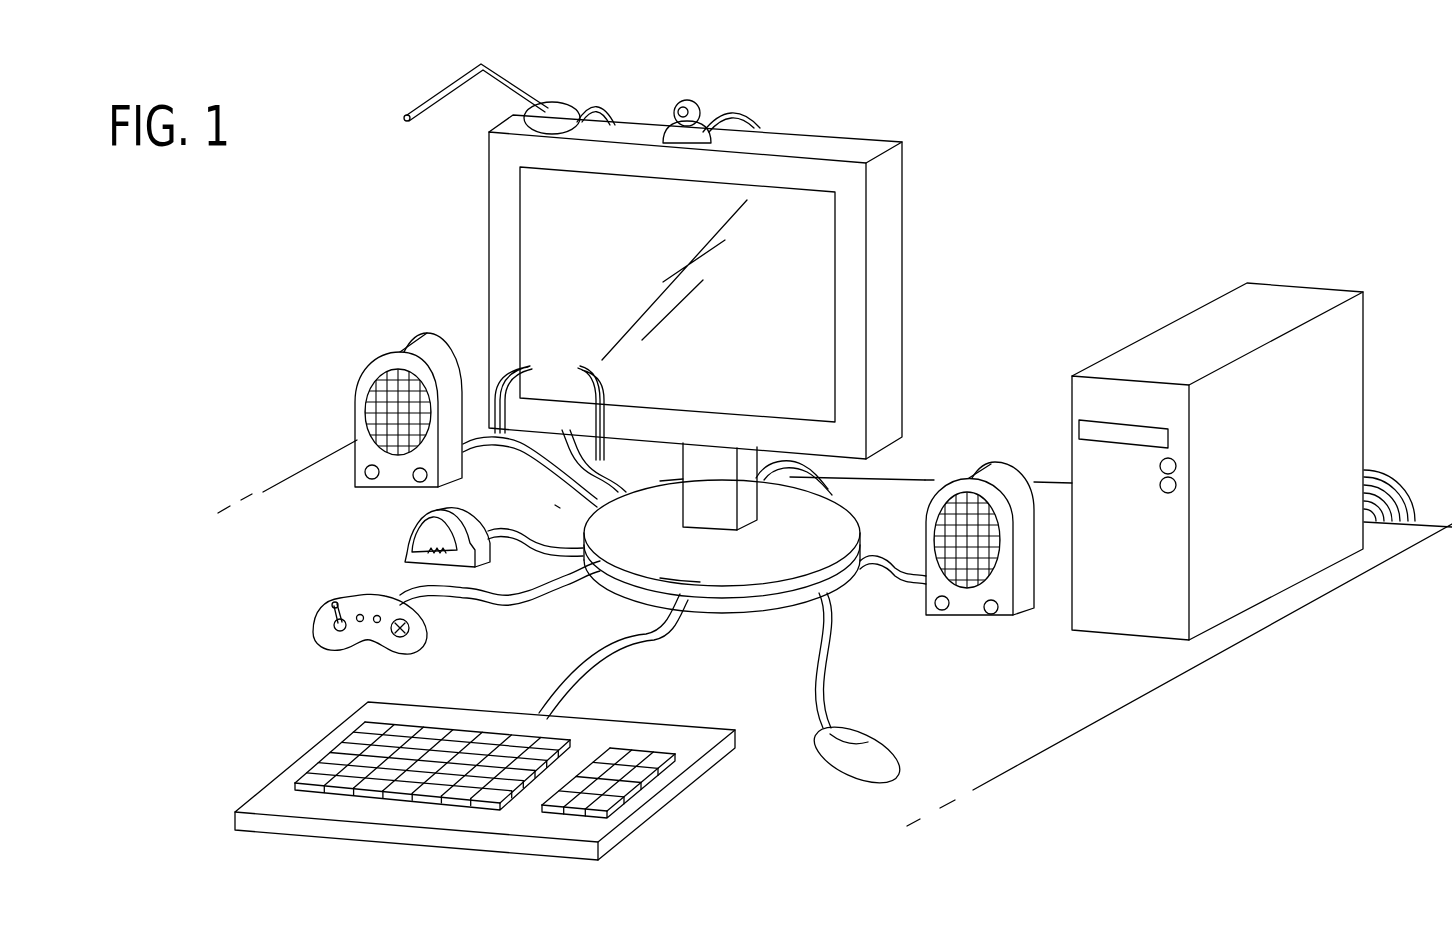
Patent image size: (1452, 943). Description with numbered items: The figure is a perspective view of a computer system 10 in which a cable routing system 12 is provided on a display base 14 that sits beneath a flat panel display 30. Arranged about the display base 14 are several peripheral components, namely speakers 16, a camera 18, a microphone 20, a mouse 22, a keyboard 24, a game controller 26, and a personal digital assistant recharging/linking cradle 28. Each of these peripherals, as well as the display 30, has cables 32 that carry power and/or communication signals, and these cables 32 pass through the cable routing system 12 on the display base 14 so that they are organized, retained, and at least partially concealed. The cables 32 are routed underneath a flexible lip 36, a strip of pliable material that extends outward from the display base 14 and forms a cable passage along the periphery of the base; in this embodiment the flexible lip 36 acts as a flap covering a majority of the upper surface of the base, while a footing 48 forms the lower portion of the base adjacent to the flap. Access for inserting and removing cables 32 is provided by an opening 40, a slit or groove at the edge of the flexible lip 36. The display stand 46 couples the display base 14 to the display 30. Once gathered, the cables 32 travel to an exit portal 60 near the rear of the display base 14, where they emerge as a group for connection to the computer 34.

The computer system 10 is at (1123, 93).
The cable routing system 12 is at (866, 498).
The display base 14 is at (555, 505).
The speakers 16 is at (360, 368).
The camera 18 is at (695, 98).
The microphone 20 is at (500, 78).
The mouse 22 is at (880, 752).
The keyboard 24 is at (345, 715).
The game controller 26 is at (365, 600).
The personal digital assistant recharging/linking cradle 28 is at (405, 532).
The display 30 is at (848, 117).
The cables 32 is at (593, 104).
The computer 34 is at (1362, 388).
The flexible lip 36 is at (820, 527).
The opening 40 is at (651, 583).
The display stand 46 is at (708, 453).
The footing 48 is at (773, 613).
The exit portal 60 is at (663, 470).